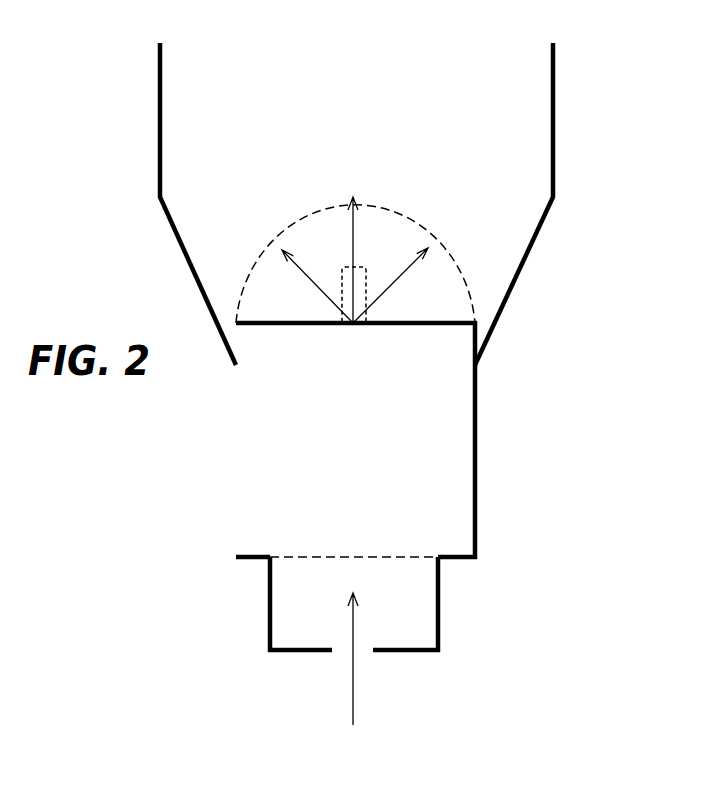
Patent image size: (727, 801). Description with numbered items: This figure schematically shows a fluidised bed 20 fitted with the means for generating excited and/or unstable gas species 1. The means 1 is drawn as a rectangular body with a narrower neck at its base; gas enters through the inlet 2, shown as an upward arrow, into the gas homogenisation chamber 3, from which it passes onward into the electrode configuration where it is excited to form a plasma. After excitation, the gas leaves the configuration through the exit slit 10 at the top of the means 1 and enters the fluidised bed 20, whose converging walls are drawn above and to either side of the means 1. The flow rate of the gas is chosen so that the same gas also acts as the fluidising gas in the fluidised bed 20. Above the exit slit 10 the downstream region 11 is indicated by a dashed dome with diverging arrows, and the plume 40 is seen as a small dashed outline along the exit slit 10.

The means for generating excited and/or unstable gas species 1 is at (235, 503).
The inlet 2 is at (362, 648).
The gas homogenisation chamber 3 is at (442, 603).
The exit slit 10 is at (355, 327).
The downstream region 11 is at (383, 202).
The fluidised bed 20 is at (543, 116).
The plume 40 is at (360, 293).